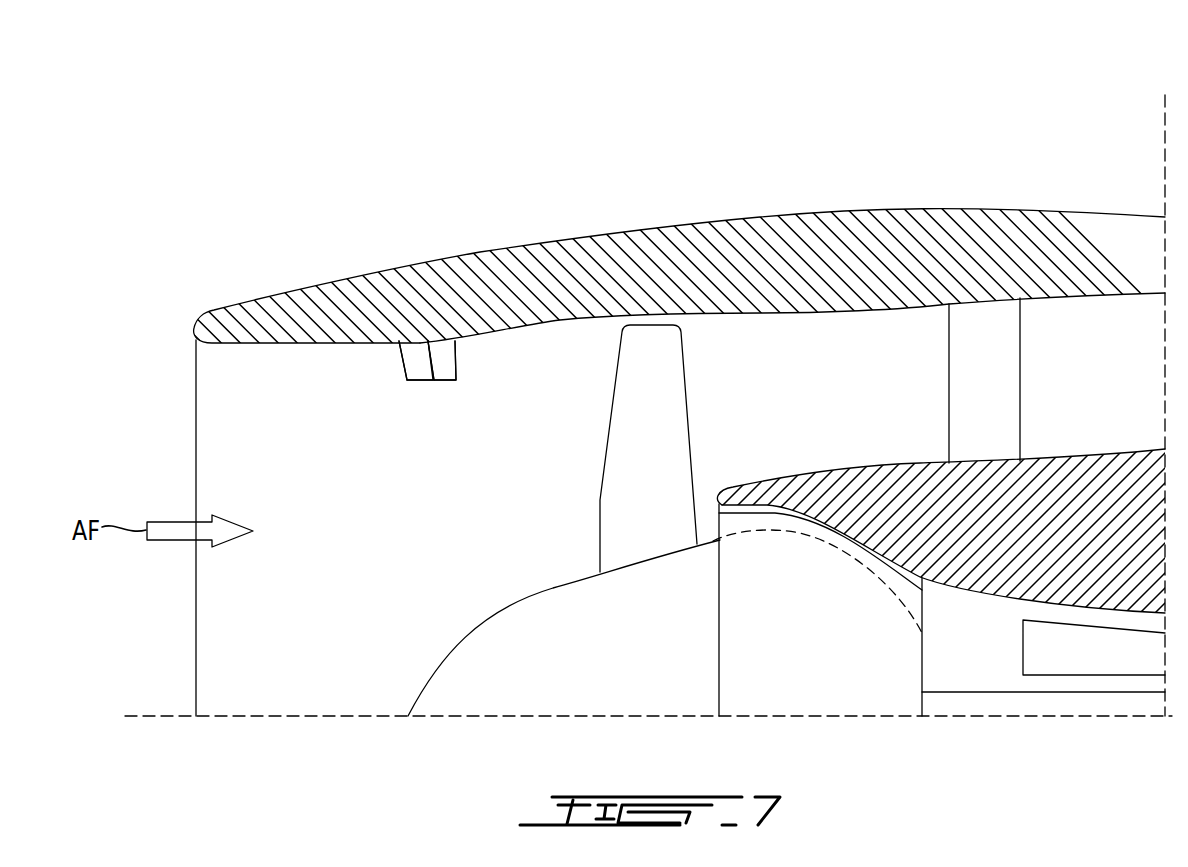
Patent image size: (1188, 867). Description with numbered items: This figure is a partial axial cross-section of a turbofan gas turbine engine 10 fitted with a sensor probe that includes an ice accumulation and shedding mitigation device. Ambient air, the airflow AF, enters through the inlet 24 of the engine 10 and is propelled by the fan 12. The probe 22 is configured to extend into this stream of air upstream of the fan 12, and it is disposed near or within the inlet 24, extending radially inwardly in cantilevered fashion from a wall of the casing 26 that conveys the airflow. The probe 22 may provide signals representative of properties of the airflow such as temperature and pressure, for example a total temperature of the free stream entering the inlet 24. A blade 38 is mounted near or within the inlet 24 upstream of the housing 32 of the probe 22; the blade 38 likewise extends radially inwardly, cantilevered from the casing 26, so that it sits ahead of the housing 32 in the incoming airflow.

The gas turbine engine 10 is at (832, 166).
The fan 12 is at (628, 511).
The probe 22 is at (381, 356).
The inlet 24 is at (222, 435).
The casing 26 is at (412, 287).
The housing 32 is at (445, 370).
The blade 38 is at (418, 367).